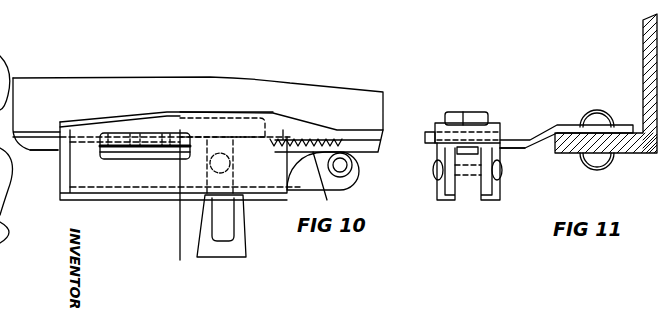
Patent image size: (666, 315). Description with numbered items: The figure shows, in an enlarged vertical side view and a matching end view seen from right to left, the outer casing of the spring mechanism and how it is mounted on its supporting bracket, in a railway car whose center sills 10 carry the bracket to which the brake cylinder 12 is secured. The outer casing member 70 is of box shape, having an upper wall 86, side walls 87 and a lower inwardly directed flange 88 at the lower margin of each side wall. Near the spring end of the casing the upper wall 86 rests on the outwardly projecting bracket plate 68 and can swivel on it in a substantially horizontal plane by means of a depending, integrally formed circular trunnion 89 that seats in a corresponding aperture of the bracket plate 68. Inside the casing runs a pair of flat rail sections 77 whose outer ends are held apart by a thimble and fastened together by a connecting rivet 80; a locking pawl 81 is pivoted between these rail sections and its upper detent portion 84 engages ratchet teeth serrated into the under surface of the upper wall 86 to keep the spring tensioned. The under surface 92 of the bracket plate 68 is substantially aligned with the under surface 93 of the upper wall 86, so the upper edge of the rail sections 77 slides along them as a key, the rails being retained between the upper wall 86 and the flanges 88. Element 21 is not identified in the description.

In FIG. 10, the center sills 10 is at (378, 105).
In FIG. 11, the center sills 10 is at (643, 97).
In FIG. 10, the brake cylinder 12 is at (112, 230).
In FIG. 10, the plate 21 is at (300, 190).
In FIG. 10, the bracket plate 68 is at (172, 137).
In FIG. 11, the bracket plate 68 is at (553, 125).
In FIG. 10, the outer casing member 70 is at (63, 202).
In FIG. 10, the flat rail sections 77 is at (56, 152).
In FIG. 10, the connecting rivet 80 is at (350, 172).
In FIG. 10, the locking pawl 81 is at (230, 247).
In FIG. 10, the upper detent portion 84 is at (230, 130).
In FIG. 10, the upper wall 86 is at (290, 137).
In FIG. 10, the side walls 87 is at (331, 184).
In FIG. 11, the lower inwardly directed flange 88 is at (490, 203).
In FIG. 10, the trunnion 89 is at (128, 137).
In FIG. 11, the under surface of bracket plate 92 is at (510, 148).
In FIG. 10, the under surface of wall 93 is at (187, 205).